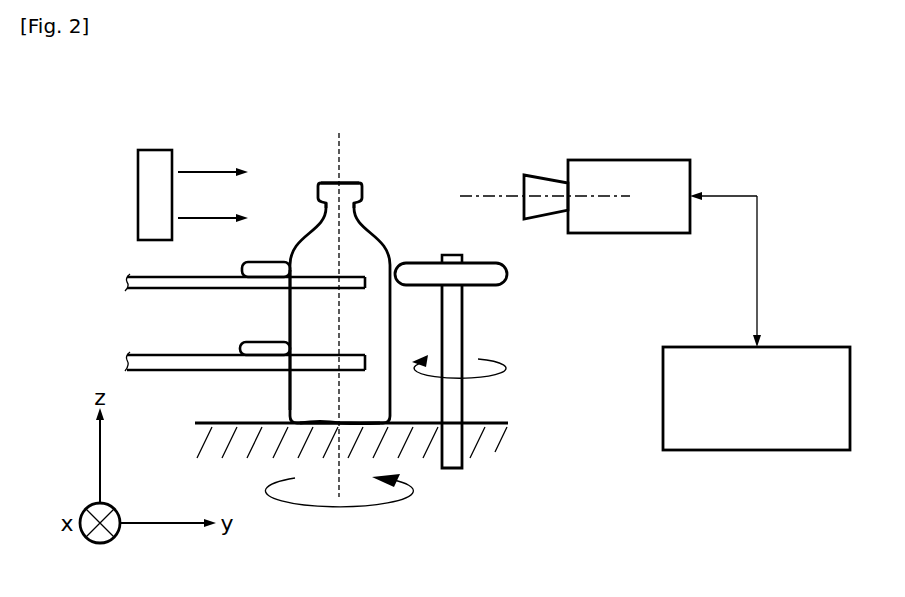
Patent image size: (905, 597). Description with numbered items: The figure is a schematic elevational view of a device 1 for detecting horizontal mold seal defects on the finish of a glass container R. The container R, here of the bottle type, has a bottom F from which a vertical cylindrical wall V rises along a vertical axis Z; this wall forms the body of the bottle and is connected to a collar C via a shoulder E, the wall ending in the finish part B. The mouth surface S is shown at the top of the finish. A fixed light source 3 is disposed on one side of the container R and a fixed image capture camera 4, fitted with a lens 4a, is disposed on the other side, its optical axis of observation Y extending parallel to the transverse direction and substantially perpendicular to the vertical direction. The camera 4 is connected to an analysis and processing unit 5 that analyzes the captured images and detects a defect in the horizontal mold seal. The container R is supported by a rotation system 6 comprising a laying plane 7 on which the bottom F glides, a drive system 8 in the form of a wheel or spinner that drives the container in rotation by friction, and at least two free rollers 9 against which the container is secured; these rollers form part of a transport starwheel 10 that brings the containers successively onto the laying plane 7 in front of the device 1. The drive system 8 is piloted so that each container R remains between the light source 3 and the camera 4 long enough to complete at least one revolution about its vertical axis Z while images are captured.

The device 1 is at (760, 110).
The fixed light source 3 is at (148, 190).
The fixed image capture camera 4 is at (624, 170).
The lens 4a is at (548, 205).
The analysis and processing unit 5 is at (753, 410).
The rotation system 6 is at (340, 508).
The laying plane 7 is at (490, 430).
The drive system 8 is at (476, 306).
The free casters or rollers 9 is at (235, 349).
The transport starwheel 10 is at (114, 285).
The finish part B is at (368, 187).
The collar C is at (357, 205).
The bottle mouth surface S is at (330, 183).
The shoulder E is at (290, 242).
The glass container R is at (280, 312).
The bottom F is at (336, 422).
The vertical cylindrical wall V is at (390, 336).
The vertical axis Z is at (340, 137).
The optical axis of observation Y is at (482, 193).